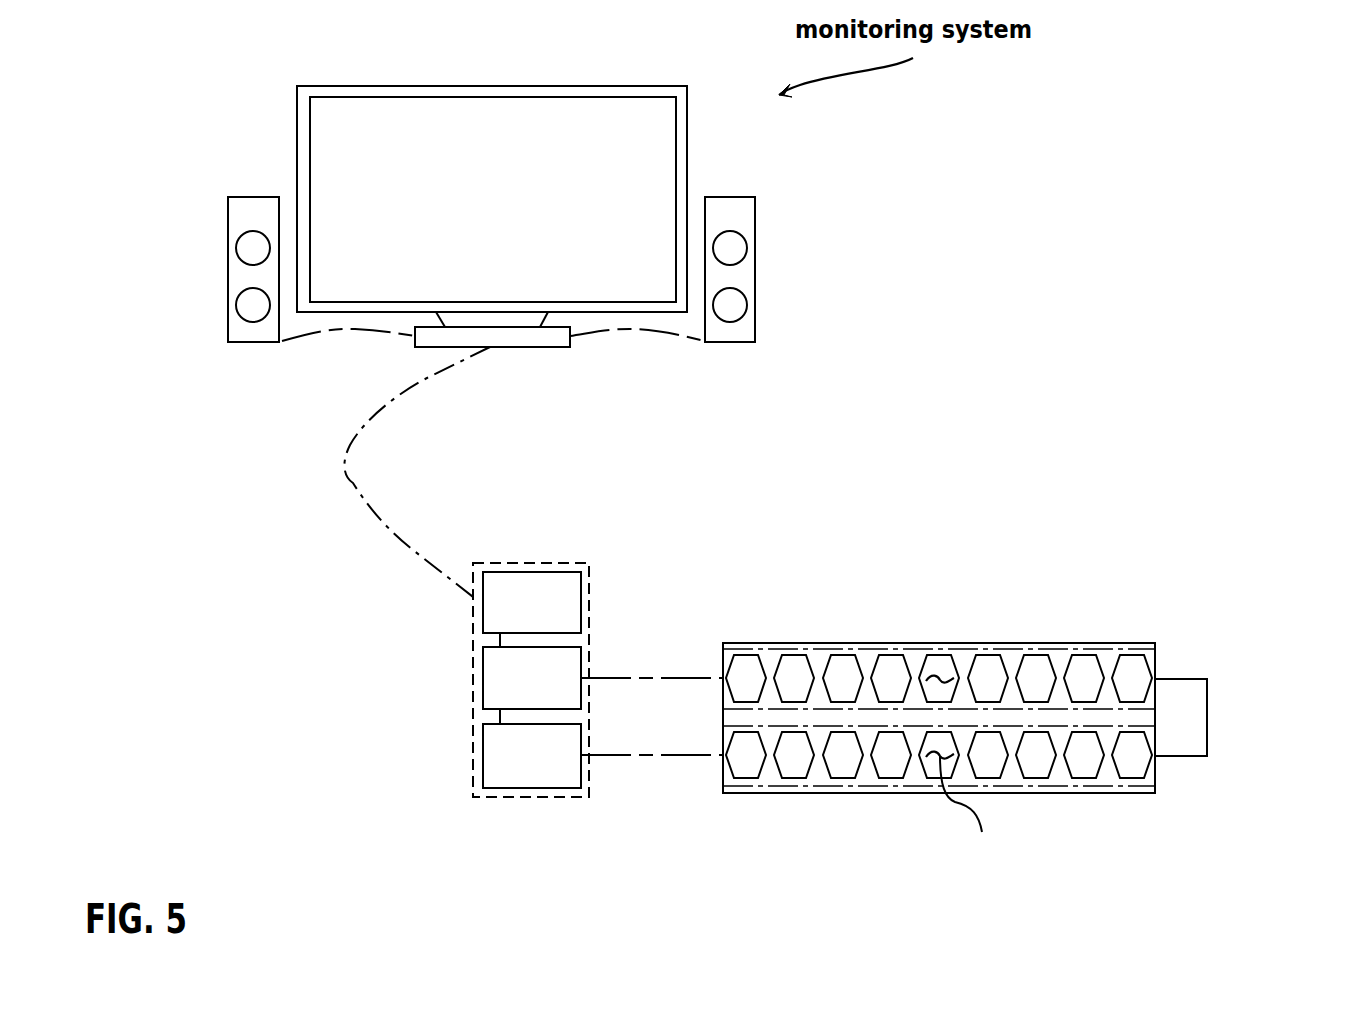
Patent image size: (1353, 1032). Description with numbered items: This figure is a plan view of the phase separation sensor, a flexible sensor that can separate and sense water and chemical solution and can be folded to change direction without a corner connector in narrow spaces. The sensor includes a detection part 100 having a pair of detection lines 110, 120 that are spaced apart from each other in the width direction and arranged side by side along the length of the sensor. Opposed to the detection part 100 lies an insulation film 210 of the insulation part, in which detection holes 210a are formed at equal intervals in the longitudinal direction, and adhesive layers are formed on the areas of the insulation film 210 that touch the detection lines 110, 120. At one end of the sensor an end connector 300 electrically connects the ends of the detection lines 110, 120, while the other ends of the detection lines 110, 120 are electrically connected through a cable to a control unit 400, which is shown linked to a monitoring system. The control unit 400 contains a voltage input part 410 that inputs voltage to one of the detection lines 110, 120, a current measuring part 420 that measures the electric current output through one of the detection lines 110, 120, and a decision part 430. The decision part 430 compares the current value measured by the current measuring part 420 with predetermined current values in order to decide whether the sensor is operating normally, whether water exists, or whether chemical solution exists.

The detection part 100 is at (969, 712).
The detection line 110 is at (728, 738).
The detection line 120 is at (888, 607).
The insulation film 210 is at (802, 650).
The detection hole 210a is at (940, 678).
The end connector 300 is at (1207, 705).
The control unit 400 is at (464, 680).
The voltage input part 410 is at (532, 756).
The current measuring part 420 is at (532, 678).
The decision part 430 is at (532, 602).